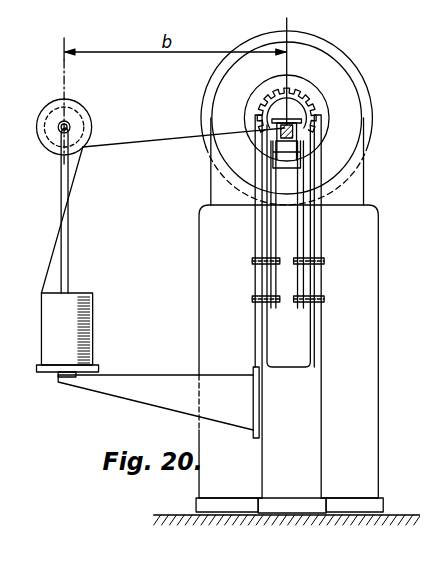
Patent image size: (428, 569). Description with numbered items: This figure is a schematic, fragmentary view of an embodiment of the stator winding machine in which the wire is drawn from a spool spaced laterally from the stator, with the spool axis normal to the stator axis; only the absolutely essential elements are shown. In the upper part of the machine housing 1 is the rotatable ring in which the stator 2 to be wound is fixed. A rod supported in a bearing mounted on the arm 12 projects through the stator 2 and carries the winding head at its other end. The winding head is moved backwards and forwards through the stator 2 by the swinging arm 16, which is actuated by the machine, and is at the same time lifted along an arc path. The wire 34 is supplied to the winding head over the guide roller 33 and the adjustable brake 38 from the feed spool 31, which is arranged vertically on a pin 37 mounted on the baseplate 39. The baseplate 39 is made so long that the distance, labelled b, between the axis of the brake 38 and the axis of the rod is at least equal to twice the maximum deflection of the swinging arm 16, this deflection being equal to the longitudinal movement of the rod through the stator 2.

The machine housing 1 is at (380, 327).
The stator 2 is at (313, 97).
The arm 12 is at (289, 314).
The swinging arm 16 is at (301, 240).
The feed spool 31 is at (82, 317).
The guide roller 33 is at (298, 122).
The wire 34 is at (153, 137).
The pin 37 is at (62, 245).
The adjustable brake 38 is at (72, 115).
The baseplate 39 is at (173, 390).